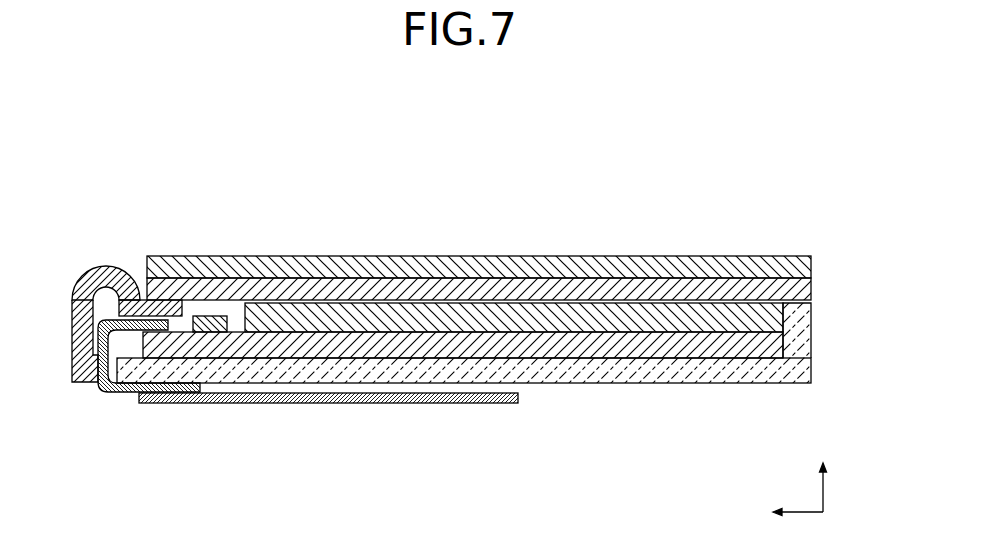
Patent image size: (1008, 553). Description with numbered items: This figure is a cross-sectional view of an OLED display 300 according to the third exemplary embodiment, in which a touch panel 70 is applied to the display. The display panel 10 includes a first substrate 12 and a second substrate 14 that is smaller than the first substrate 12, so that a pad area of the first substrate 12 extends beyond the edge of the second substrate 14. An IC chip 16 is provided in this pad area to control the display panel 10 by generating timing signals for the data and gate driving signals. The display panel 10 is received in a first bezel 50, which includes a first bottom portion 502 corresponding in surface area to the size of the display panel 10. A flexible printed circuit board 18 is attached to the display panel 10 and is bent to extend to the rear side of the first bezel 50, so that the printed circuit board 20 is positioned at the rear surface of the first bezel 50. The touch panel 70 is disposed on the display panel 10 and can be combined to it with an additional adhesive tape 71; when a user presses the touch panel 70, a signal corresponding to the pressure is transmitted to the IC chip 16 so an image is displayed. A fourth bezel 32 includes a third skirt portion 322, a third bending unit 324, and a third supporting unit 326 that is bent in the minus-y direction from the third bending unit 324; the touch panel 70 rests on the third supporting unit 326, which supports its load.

The OLED display 300 is at (425, 154).
The touch panel 70 is at (479, 247).
The adhesive tape 71 is at (797, 297).
The fourth bezel 32 is at (95, 320).
The third skirt portion 322 is at (80, 345).
The third bending unit 324 is at (116, 278).
The third supporting unit 326 is at (157, 308).
The IC chip 16 is at (208, 322).
The display panel 10 is at (463, 386).
The second substrate 14 is at (596, 322).
The first substrate 12 is at (640, 343).
The first bezel 50 is at (492, 380).
The first bottom portion 502 is at (703, 362).
The flexible printed circuit board 18 is at (124, 393).
The printed circuit board 20 is at (246, 404).